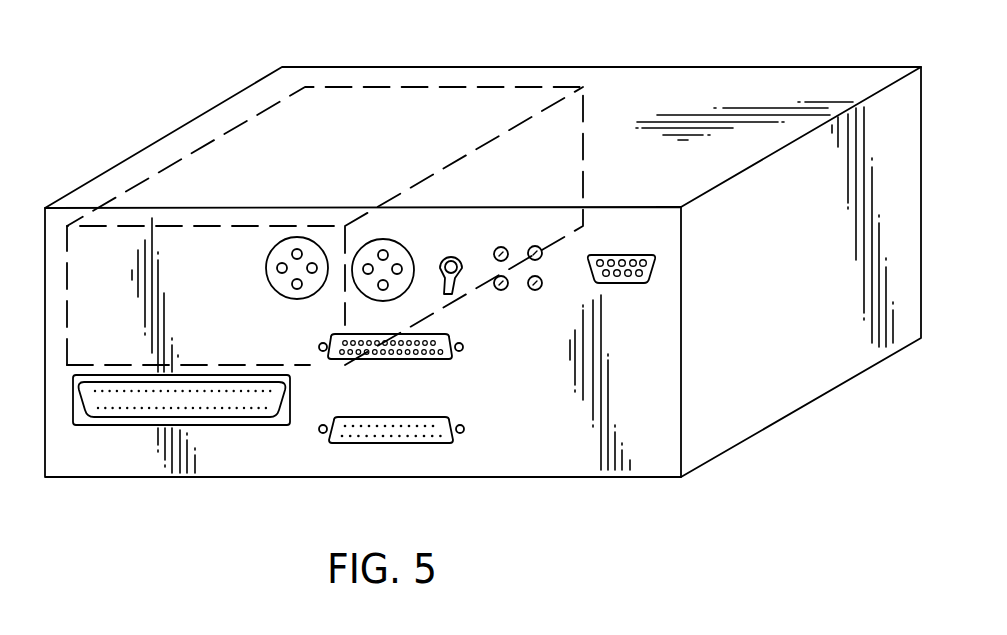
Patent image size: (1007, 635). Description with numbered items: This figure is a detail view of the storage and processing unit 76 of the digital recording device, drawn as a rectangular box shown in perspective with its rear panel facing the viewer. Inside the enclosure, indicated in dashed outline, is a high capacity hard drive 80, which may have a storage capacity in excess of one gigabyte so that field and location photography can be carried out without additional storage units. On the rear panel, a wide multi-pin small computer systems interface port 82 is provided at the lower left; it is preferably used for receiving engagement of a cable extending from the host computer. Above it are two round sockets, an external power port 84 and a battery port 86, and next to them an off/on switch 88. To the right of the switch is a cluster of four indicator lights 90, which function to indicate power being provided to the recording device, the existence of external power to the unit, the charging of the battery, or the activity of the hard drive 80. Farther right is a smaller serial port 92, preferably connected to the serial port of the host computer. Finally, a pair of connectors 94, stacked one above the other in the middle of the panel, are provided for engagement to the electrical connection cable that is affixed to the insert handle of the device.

The storage and processing unit 76 is at (160, 125).
The high capacity hard drive 80 is at (330, 122).
The small computer systems interface port 82 is at (120, 400).
The external power port 84 is at (283, 258).
The battery port 86 is at (383, 250).
The off/on switch 88 is at (452, 258).
The indicator lights 90 is at (506, 259).
The serial port 92 is at (642, 268).
The pair of connectors 94 is at (445, 348).